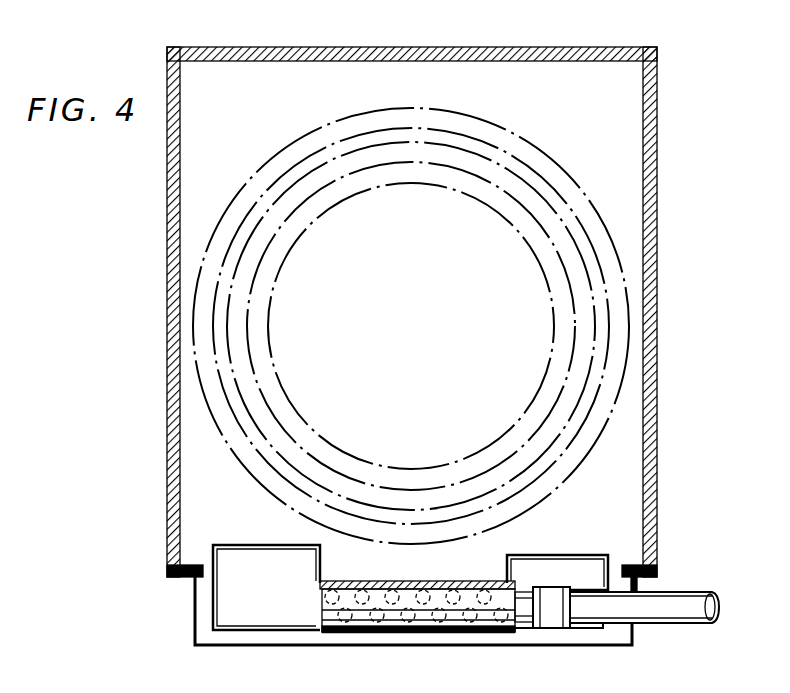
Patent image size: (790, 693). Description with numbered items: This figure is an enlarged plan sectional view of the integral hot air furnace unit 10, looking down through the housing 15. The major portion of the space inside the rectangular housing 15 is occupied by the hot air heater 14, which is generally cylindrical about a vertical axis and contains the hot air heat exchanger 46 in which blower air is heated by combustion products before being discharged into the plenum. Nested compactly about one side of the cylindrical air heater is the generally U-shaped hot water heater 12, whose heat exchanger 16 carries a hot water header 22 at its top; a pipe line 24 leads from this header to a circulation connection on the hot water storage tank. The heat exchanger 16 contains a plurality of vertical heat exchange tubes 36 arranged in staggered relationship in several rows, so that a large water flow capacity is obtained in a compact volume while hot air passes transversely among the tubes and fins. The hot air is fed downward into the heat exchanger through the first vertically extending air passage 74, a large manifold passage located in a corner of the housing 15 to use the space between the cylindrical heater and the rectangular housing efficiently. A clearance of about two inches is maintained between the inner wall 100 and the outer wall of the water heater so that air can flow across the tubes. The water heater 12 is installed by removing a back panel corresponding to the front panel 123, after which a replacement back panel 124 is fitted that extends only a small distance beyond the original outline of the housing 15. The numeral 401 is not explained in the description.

The hot air furnace unit 10 is at (436, 303).
The housing 15 is at (657, 200).
The front panel 123 is at (422, 47).
The hot air heater 14 is at (566, 180).
The hot air heat exchanger 46 is at (448, 340).
The heat exchanger 16 is at (298, 633).
The first vertically extending air passage 74 is at (273, 591).
The inner wall 100 is at (430, 582).
The hot water header 22 is at (351, 591).
The heat exchange tubes 36 is at (486, 622).
The bottom plate 401 is at (345, 632).
The replacement back panel 124 is at (420, 645).
The hot water heater 12 is at (538, 630).
The pipe line 24 is at (679, 623).